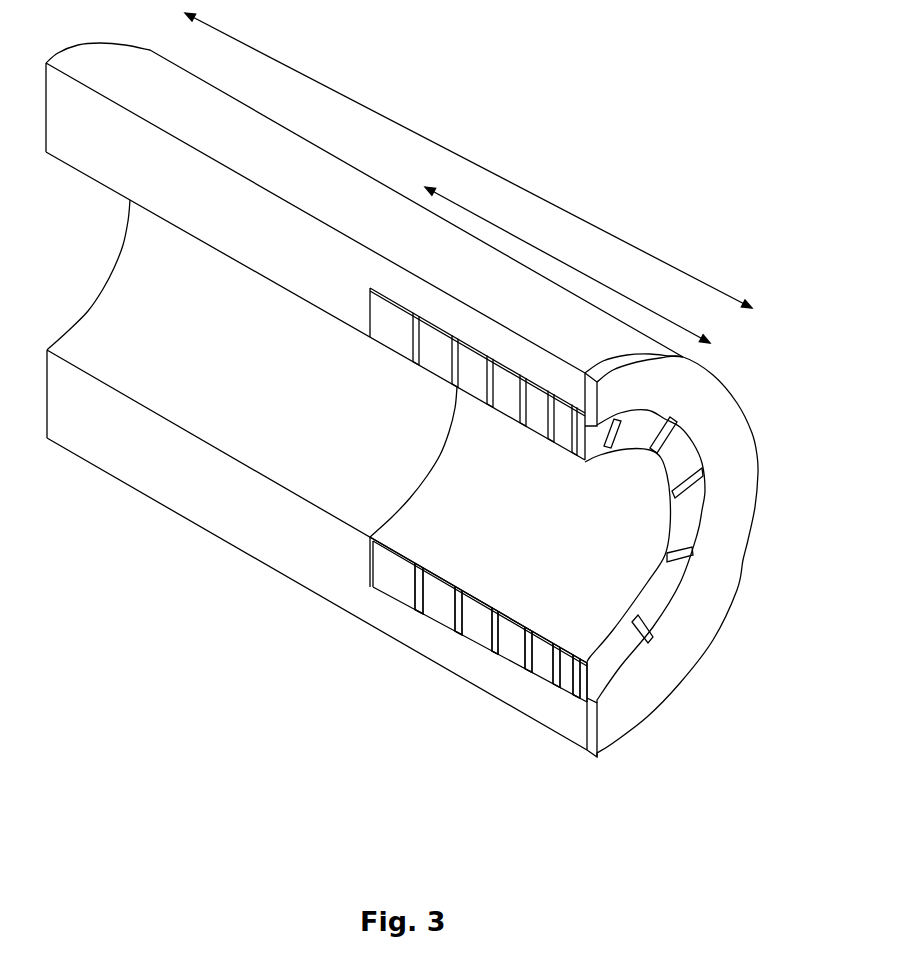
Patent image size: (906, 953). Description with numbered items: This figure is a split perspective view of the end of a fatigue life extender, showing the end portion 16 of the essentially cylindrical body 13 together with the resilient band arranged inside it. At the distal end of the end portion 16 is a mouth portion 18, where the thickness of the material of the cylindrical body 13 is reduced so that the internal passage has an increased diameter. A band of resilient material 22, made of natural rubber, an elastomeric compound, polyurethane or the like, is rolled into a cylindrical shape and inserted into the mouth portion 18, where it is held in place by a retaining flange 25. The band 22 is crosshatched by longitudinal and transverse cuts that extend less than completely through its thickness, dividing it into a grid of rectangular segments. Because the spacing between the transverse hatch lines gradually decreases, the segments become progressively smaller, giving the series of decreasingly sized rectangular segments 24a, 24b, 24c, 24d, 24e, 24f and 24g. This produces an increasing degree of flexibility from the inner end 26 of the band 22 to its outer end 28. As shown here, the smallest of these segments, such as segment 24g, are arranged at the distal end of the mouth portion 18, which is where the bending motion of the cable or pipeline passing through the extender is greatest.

The cylindrical body 13 is at (115, 462).
The end portion 16 is at (295, 70).
The mouth portion 18 is at (563, 262).
The band of resilient material 22 is at (485, 448).
The rectangular segment 24a is at (390, 573).
The rectangular segment 24b is at (442, 612).
The rectangular segment 24c is at (470, 612).
The rectangular segment 24d is at (515, 653).
The rectangular segment 24e is at (542, 653).
The rectangular segment 24f is at (562, 675).
The rectangular segment 24g is at (585, 663).
The retaining flange 25 is at (667, 675).
The inner end 26 is at (422, 480).
The outer end 28 is at (683, 537).